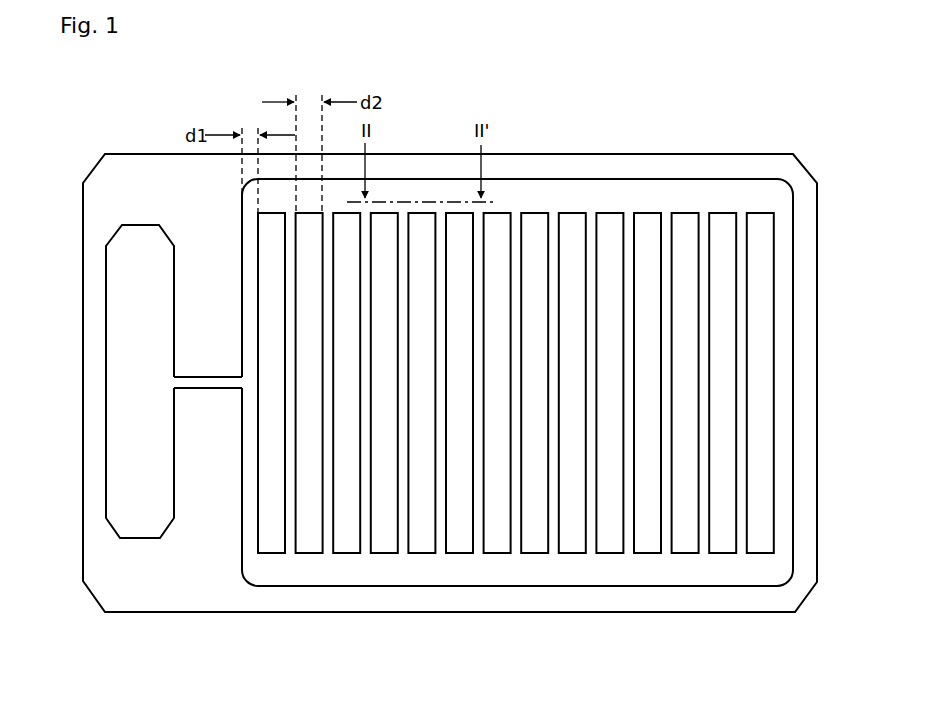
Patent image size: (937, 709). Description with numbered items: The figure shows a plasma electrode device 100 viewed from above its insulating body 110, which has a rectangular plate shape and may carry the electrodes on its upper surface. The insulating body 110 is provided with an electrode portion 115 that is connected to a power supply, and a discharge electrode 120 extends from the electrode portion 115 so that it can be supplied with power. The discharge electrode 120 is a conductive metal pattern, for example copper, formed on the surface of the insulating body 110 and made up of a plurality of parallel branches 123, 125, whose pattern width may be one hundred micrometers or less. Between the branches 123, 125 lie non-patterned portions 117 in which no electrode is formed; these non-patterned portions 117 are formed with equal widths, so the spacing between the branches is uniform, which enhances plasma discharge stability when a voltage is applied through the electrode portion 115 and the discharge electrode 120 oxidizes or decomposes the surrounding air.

The plasma electrode device 100 is at (420, 364).
The insulating body 110 is at (140, 588).
The electrode portion 115 is at (180, 383).
The non-patterned portion 117 is at (315, 537).
The discharge electrode 120 is at (542, 188).
The branch 123 is at (290, 525).
The branch 125 is at (328, 502).